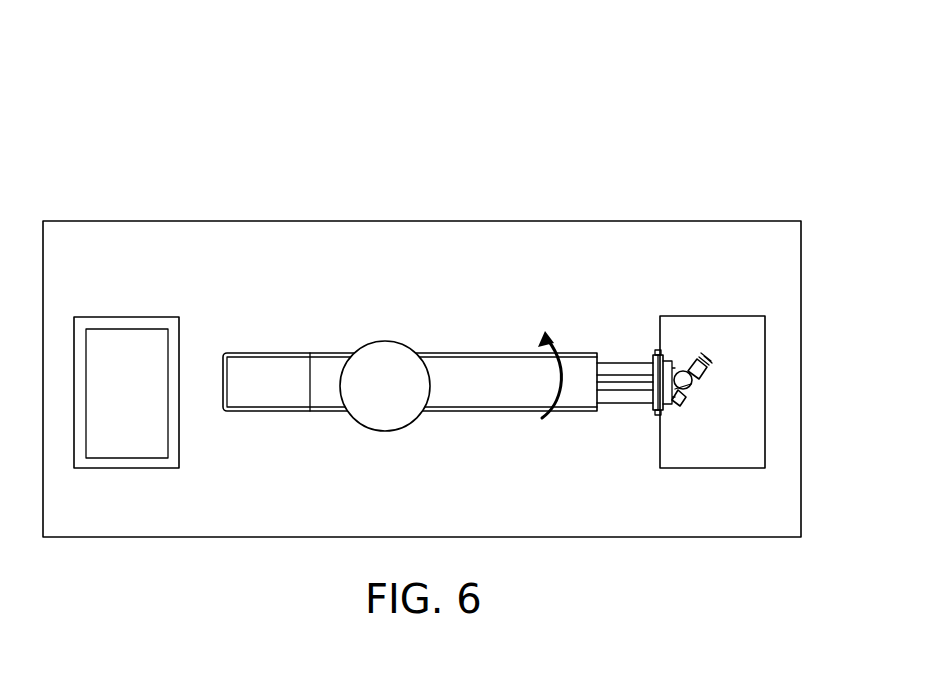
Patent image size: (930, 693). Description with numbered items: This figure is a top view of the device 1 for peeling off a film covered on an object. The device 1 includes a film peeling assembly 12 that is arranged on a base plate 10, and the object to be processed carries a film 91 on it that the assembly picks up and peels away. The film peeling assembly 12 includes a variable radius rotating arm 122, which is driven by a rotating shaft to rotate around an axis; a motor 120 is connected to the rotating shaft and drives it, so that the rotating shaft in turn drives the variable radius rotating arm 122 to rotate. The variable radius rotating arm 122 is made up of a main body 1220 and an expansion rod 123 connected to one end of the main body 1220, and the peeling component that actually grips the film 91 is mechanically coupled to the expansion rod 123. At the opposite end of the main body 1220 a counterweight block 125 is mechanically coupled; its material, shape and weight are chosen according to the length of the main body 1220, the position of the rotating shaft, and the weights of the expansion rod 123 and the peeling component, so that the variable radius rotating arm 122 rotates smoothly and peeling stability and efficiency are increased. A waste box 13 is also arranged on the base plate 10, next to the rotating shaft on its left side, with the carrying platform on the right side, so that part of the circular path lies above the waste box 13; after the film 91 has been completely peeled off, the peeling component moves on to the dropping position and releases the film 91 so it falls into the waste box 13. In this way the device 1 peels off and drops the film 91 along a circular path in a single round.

The device 1 is at (386, 84).
The base plate 10 is at (222, 224).
The film peeling assembly 12 is at (460, 283).
The waste box 13 is at (133, 327).
The film 91 is at (727, 327).
The motor 120 is at (383, 358).
The variable radius rotating arm 122 is at (334, 436).
The expansion rod 123 is at (630, 368).
The counterweight block 125 is at (275, 362).
The main body 1220 is at (465, 400).